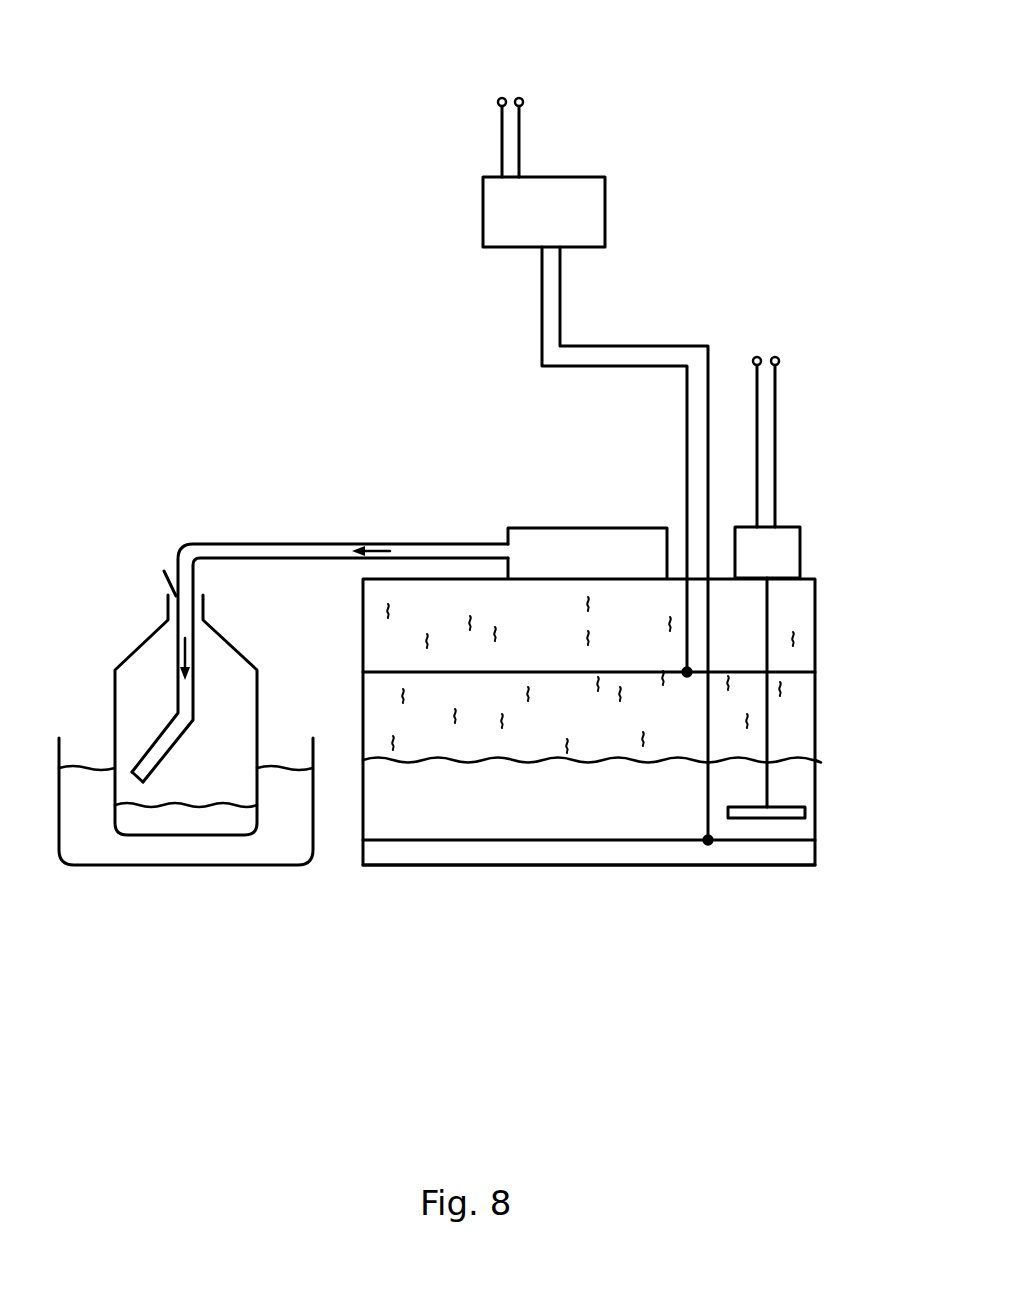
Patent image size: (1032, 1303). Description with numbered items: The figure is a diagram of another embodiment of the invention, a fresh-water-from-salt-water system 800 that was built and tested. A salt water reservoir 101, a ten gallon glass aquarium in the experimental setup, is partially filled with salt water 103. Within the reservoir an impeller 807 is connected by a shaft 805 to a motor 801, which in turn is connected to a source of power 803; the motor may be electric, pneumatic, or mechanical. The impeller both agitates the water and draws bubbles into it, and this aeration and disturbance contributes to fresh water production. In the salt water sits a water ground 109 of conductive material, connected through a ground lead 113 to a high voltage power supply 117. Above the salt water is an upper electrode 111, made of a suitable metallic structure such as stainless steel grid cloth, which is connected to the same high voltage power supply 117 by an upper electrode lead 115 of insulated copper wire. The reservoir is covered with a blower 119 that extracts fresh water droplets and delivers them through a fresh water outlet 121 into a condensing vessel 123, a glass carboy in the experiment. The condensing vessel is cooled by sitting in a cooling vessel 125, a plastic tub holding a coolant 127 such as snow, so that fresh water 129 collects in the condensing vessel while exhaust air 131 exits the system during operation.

The distillation system 800 is at (200, 172).
The high voltage power supply 117 is at (590, 188).
The upper electrode lead 115 is at (542, 292).
The ground lead 113 is at (560, 308).
The source of power 803 is at (777, 412).
The motor 801 is at (793, 527).
The shaft 805 is at (768, 732).
The impeller 807 is at (788, 807).
The blower 119 is at (542, 543).
The fresh water outlet 121 is at (312, 544).
The exhaust air 131 is at (158, 563).
The condensing vessel 123 is at (115, 670).
The fresh water 129 is at (182, 822).
The cooling vessel 125 is at (270, 867).
The coolant 127 is at (83, 808).
The salt water reservoir 101 is at (363, 620).
The upper electrode 111 is at (402, 672).
The water ground 109 is at (557, 840).
The salt water 103 is at (398, 832).